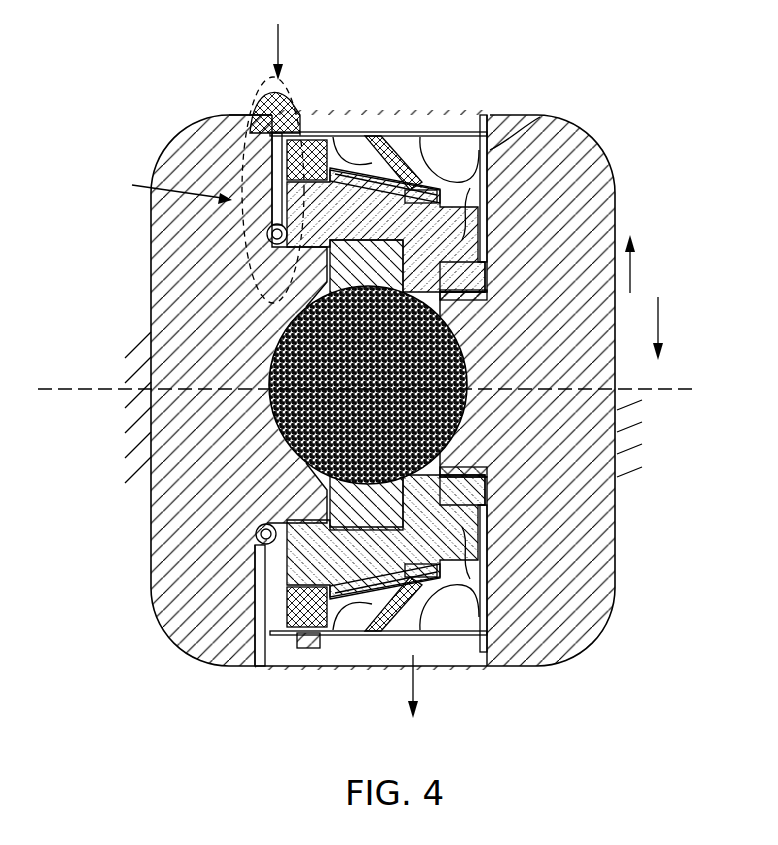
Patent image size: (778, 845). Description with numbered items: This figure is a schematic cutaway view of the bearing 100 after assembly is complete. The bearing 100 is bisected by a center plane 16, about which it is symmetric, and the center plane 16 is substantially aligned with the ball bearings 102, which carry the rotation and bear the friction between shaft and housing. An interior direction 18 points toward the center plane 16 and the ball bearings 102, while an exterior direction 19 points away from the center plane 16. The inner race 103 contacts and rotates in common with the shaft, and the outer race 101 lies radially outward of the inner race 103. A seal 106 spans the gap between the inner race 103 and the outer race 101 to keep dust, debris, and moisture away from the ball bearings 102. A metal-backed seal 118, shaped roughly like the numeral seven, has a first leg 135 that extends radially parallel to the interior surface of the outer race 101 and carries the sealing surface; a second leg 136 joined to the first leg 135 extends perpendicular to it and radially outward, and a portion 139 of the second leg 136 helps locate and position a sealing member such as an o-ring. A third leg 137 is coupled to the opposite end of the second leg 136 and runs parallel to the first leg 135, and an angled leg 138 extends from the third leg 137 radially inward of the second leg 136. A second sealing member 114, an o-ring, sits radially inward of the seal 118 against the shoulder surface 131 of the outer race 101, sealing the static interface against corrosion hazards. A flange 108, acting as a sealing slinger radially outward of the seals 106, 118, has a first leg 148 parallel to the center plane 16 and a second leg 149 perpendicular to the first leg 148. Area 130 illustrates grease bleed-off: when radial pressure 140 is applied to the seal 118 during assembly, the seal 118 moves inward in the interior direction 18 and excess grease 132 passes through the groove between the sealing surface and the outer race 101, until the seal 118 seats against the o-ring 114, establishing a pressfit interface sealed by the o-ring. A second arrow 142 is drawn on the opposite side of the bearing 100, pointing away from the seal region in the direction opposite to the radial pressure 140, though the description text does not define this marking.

The bearing 100 is at (92, 103).
The outer race 101 is at (178, 290).
The ball bearings 102 is at (305, 422).
The inner race 103 is at (590, 620).
The seal 106 is at (430, 131).
The flange 108 is at (497, 95).
The second sealing member 114 is at (272, 232).
The seal 118 is at (167, 186).
The area 130 is at (302, 88).
The shoulder surface 131 is at (266, 247).
The excess grease 132 is at (485, 262).
The first leg 135 is at (270, 177).
The second leg 136 is at (263, 102).
The third leg 137 is at (344, 135).
The angled leg 138 is at (398, 128).
The portion 139 is at (267, 130).
The radial pressure 140 is at (278, 30).
The opposite axial force direction 142 is at (422, 689).
The first leg 148 is at (446, 130).
The second leg 149 is at (540, 117).
The center plane 16 is at (683, 392).
The interior direction 18 is at (660, 322).
The exterior direction 19 is at (633, 277).